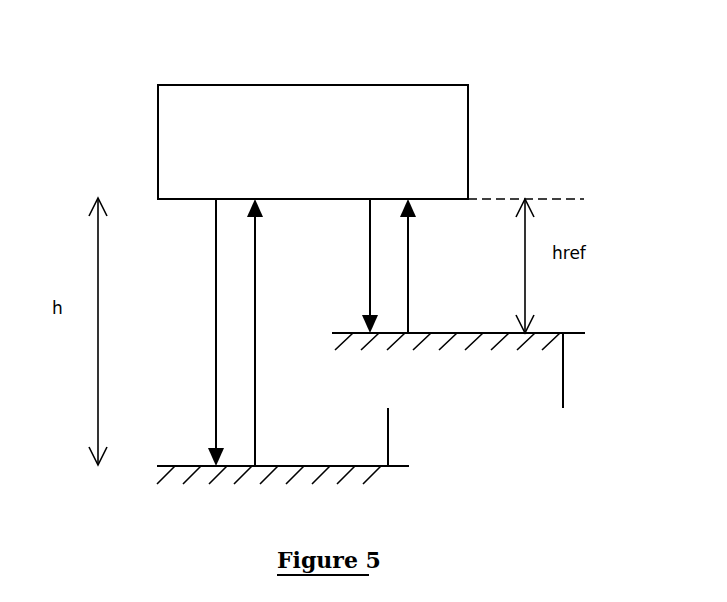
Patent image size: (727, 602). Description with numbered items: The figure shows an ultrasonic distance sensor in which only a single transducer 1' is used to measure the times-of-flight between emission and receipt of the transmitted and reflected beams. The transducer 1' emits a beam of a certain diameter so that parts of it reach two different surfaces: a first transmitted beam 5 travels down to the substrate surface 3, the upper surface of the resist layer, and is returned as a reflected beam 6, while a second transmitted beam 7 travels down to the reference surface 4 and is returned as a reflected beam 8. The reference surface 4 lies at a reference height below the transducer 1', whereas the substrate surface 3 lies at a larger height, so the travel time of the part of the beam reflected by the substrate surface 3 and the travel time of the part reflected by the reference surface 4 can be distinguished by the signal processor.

The single transducer 1' is at (313, 107).
The substrate surface 3 is at (283, 429).
The reference surface 4 is at (458, 384).
The first transmitted beam 5 is at (213, 312).
The reflected beam 6 is at (255, 332).
The second transmitted beam 7 is at (370, 257).
The reflected beam 8 is at (409, 273).